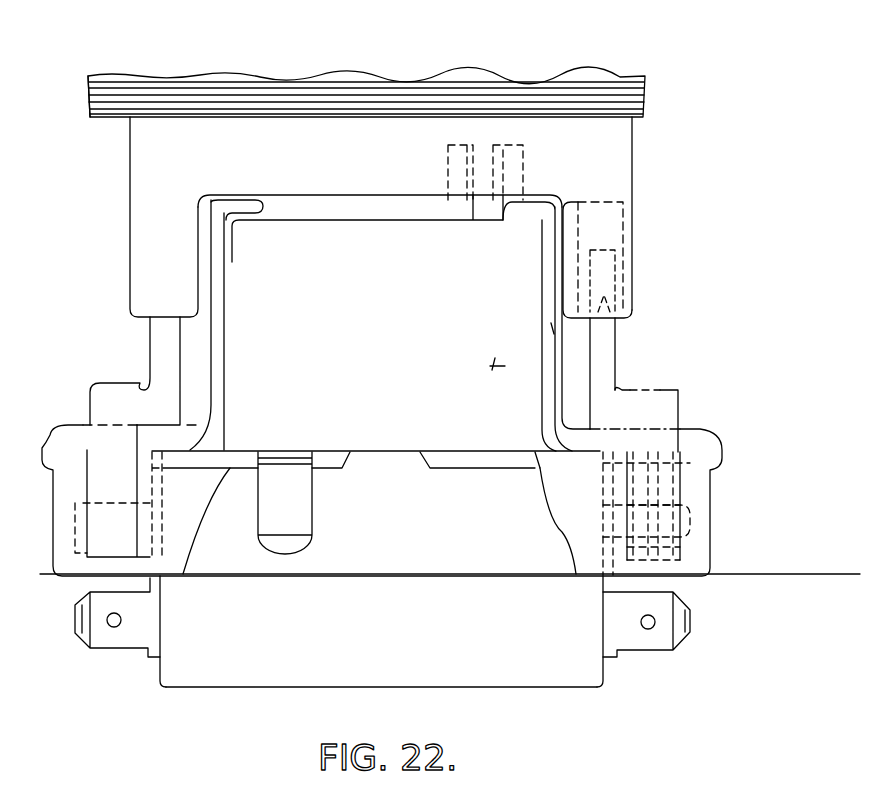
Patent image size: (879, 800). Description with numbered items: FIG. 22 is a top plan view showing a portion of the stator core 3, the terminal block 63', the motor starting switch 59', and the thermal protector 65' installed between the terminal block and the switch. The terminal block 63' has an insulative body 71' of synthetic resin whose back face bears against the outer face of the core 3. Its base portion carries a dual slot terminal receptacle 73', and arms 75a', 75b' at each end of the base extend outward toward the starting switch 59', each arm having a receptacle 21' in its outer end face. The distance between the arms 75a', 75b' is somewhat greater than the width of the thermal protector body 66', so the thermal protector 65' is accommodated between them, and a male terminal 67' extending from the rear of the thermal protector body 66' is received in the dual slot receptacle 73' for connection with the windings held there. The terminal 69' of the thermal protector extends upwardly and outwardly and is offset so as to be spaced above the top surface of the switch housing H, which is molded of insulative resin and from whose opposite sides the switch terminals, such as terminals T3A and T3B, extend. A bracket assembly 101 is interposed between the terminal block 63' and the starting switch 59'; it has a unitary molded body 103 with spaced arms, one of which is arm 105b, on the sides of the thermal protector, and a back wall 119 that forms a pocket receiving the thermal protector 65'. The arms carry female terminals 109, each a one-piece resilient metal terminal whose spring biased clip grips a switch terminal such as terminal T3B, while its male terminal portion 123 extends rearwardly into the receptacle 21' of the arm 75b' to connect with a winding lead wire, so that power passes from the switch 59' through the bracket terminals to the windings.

The core 3 is at (614, 74).
The back wall 119 is at (232, 200).
The arm 75a' is at (131, 271).
The arm 75b' is at (635, 260).
The male terminal 67' is at (394, 301).
The dual slot terminal receptacle 73' is at (513, 165).
The insulative body 71' is at (659, 213).
The terminal block 63' is at (635, 245).
The thermal protector body 66' is at (442, 325).
The receptacle 21' is at (644, 281).
The unitary body 103 is at (553, 329).
The male terminal portion 123 is at (500, 366).
The thermal protector 65' is at (628, 373).
The bracket assembly 101 is at (567, 392).
The female terminal 109 is at (686, 406).
The arm 105b is at (711, 483).
The terminal T3B is at (692, 526).
The terminal T3A is at (691, 627).
The terminal 69' is at (271, 545).
The housing H is at (322, 662).
The motor starting switch 59' is at (381, 709).